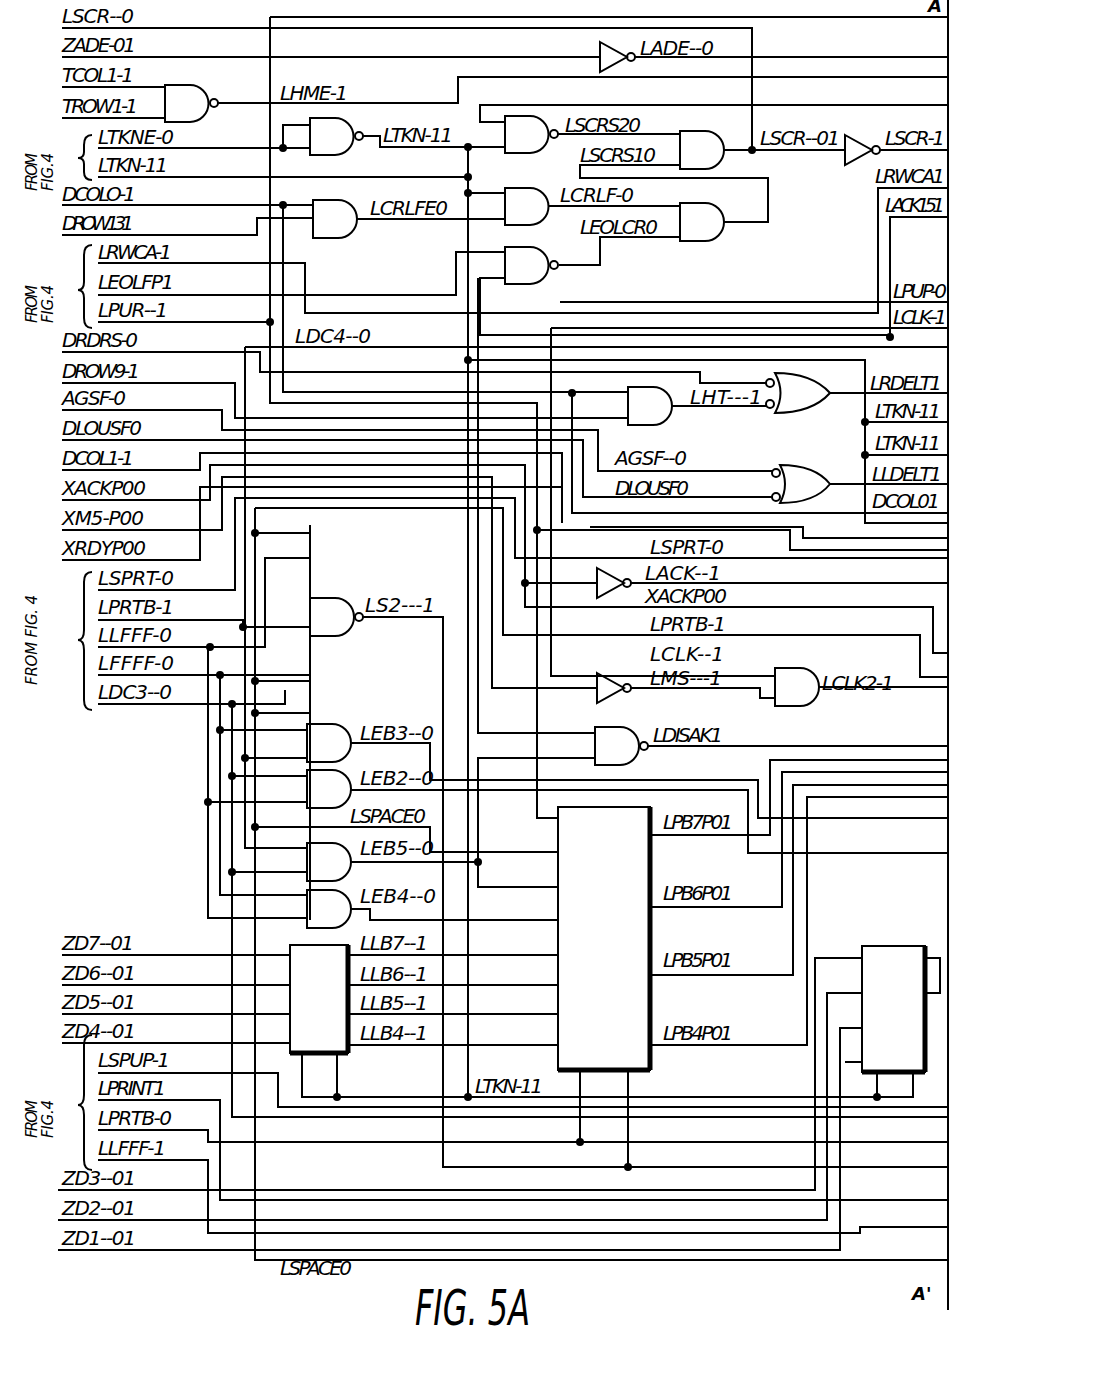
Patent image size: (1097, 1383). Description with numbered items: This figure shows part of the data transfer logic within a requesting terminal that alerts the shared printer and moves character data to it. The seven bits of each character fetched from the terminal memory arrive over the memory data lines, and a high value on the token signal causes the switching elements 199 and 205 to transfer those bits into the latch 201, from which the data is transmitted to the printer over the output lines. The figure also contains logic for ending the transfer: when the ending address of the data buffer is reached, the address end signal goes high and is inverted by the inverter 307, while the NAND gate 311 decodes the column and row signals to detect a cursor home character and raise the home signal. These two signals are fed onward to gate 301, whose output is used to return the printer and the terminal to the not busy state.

The NAND gate 311 is at (200, 88).
The inverter 307 is at (600, 48).
The NOR gate 301 is at (800, 376).
The switching element 199 is at (348, 1055).
The latch 201 is at (650, 1065).
The switching element 205 is at (873, 946).